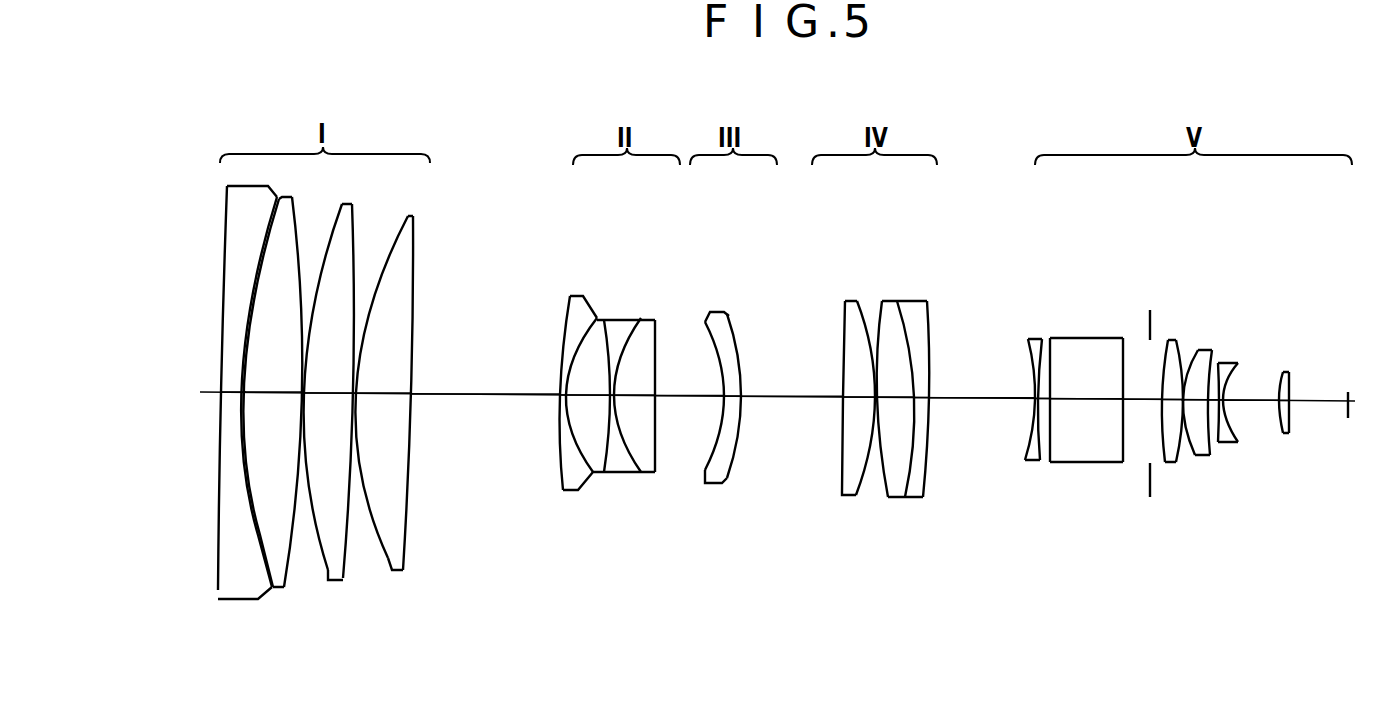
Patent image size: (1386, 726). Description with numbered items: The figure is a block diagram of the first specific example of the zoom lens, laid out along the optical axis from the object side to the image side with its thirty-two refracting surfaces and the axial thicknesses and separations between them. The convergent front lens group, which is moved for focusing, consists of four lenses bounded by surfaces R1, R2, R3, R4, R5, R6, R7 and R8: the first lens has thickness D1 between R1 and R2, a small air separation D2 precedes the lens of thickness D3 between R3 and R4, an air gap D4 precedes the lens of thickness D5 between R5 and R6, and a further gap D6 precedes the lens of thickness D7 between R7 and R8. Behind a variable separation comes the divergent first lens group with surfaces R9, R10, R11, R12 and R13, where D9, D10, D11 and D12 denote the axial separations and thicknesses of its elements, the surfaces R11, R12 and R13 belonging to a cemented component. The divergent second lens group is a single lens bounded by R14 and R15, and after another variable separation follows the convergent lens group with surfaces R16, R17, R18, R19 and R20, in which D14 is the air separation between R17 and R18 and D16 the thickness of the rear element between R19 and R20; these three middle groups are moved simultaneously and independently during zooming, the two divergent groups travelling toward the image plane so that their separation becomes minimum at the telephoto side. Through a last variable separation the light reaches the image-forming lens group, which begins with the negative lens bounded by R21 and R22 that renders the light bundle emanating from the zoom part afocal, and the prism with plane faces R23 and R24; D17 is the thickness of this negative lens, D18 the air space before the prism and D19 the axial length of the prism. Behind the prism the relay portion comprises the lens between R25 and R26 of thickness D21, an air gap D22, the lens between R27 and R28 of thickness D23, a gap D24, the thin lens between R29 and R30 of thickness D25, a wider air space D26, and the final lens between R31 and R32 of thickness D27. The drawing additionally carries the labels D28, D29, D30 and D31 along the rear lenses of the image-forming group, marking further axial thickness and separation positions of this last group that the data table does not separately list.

The first lens surface R1 is at (219, 588).
The second lens surface R2 is at (257, 548).
The third lens surface R3 is at (272, 588).
The fourth lens surface R4 is at (286, 588).
The fifth lens surface R5 is at (328, 580).
The sixth lens surface R6 is at (345, 573).
The seventh lens surface R7 is at (388, 560).
The eighth lens surface R8 is at (404, 557).
The ninth lens surface R9 is at (560, 480).
The tenth lens surface R10 is at (578, 465).
The eleventh lens surface R11 is at (600, 465).
The twelfth lens surface R12 is at (628, 463).
The thirteenth lens surface R13 is at (650, 462).
The fourteenth lens surface R14 is at (702, 466).
The fifteenth lens surface R15 is at (732, 465).
The sixteenth lens surface R16 is at (840, 480).
The seventeenth lens surface R17 is at (856, 480).
The eighteenth lens surface R18 is at (886, 480).
The nineteenth lens surface R19 is at (902, 480).
The twentieth lens surface R20 is at (925, 480).
The twenty-first lens surface R21 is at (1023, 447).
The twenty-second lens surface R22 is at (1038, 448).
The twenty-third surface R23 is at (1048, 447).
The twenty-fourth surface R24 is at (1122, 448).
The twenty-fifth lens surface R25 is at (1166, 452).
The twenty-sixth lens surface R26 is at (1175, 452).
The twenty-seventh lens surface R27 is at (1193, 452).
The twenty-eighth lens surface R28 is at (1208, 435).
The twenty-ninth lens surface R29 is at (1217, 432).
The thirtieth lens surface R30 is at (1233, 433).
The thirty-first lens surface R31 is at (1278, 432).
The thirty-second lens surface R32 is at (1292, 428).
The thickness of first front-group lens D1 is at (243, 392).
The air separation between first and second front-group lenses D2 is at (252, 386).
The thickness of second front-group lens D3 is at (273, 381).
The air separation between second and third front-group lenses D4 is at (311, 388).
The thickness of third front-group lens D5 is at (328, 381).
The air separation between third and fourth front-group lenses D6 is at (355, 388).
The thickness of fourth front-group lens D7 is at (383, 381).
The air separation within divergent first lens group D9 is at (561, 393).
The thickness of first cemented element in divergent first lens group D10 is at (588, 386).
The thickness of second cemented element in divergent first lens group D11 is at (614, 390).
The thickness of divergent second lens group lens D12 is at (634, 384).
The air separation within convergent lens group D14 is at (742, 393).
The thickness of rear cemented element in convergent lens group D16 is at (859, 388).
The thickness of afocal-rendering negative lens D17 is at (877, 393).
The air separation between negative lens and prism D18 is at (895, 388).
The axial length of prism D19 is at (930, 395).
The thickness of first relay lens D21 is at (1036, 398).
The air separation between first and second relay lenses D22 is at (1050, 397).
The thickness of second relay lens D23 is at (1086, 389).
The air separation between second and third relay lenses D24 is at (1142, 391).
The thickness of third relay lens D25 is at (1170, 398).
The air separation between third and last relay lenses D26 is at (1179, 398).
The thickness of last relay lens D27 is at (1197, 391).
The axial air separation D28 is at (1215, 398).
The axial thickness D29 is at (1230, 397).
The axial air separation D30 is at (1251, 391).
The axial thickness D31 is at (1290, 395).